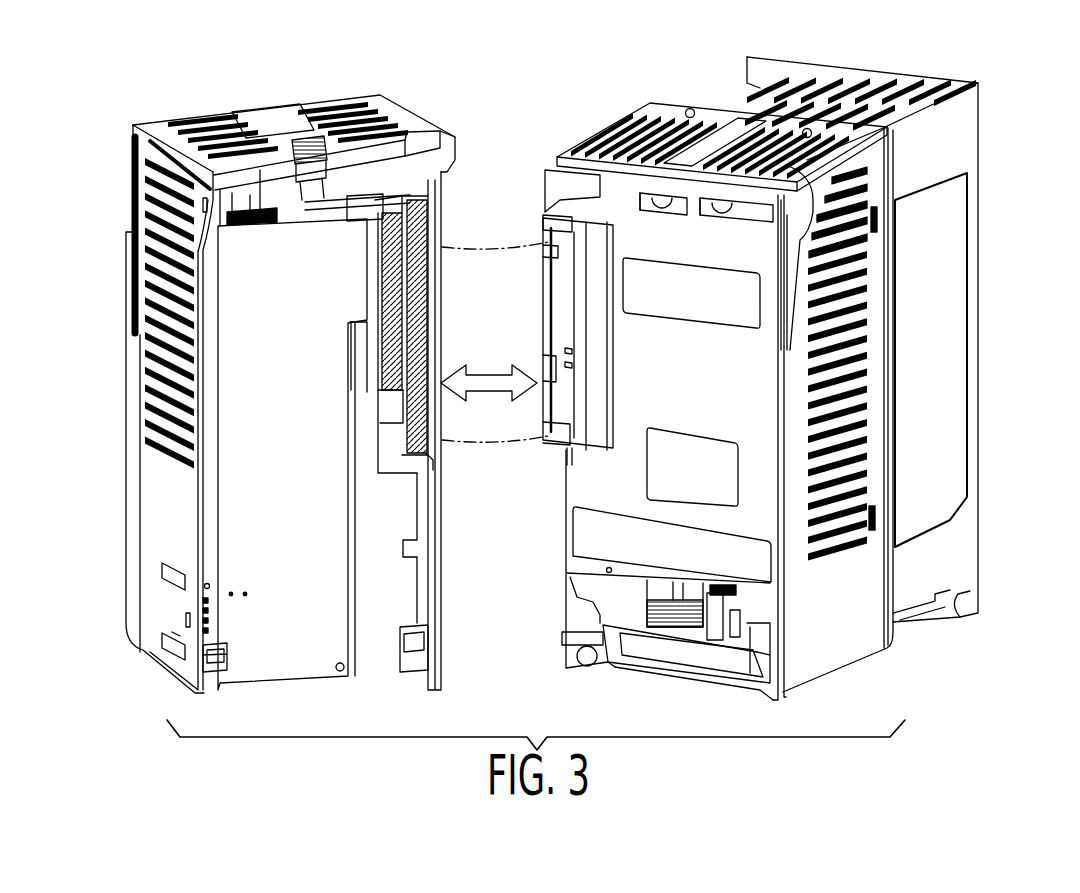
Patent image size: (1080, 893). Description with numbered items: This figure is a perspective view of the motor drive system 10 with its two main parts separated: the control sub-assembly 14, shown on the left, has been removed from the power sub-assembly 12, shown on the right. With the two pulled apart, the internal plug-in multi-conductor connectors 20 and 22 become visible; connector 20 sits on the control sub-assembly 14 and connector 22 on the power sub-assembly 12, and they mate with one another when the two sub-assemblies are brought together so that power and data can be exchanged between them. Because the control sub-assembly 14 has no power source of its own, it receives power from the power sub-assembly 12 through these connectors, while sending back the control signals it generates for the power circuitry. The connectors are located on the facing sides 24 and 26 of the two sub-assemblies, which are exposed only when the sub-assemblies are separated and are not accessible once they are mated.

The motor drive system 10 is at (1017, 169).
The power sub-assembly 12 is at (962, 133).
The control sub-assembly 14 is at (125, 487).
The multi-conductor connector 20 is at (420, 208).
The multi-conductor connector 22 is at (597, 346).
The facing side of the control sub-assembly 24 is at (229, 523).
The facing side of the power sub-assembly 26 is at (607, 477).